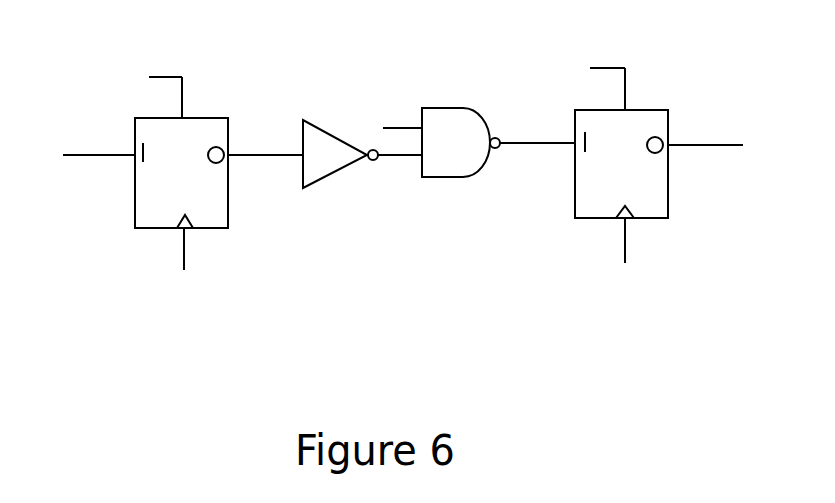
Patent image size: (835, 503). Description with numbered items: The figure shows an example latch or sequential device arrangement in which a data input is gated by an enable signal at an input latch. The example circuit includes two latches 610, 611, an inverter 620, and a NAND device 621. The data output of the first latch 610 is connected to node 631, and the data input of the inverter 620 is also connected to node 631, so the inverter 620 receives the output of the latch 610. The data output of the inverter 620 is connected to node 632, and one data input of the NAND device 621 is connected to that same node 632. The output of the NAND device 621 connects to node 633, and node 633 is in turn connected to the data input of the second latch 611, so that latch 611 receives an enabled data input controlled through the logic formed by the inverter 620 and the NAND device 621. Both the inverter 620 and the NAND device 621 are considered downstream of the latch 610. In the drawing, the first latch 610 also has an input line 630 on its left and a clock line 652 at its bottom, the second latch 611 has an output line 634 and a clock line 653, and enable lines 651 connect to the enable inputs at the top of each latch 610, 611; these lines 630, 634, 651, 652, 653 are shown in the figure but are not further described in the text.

The latch 610 is at (163, 188).
The latch 611 is at (604, 180).
The inverter 620 is at (308, 164).
The NAND device 621 is at (466, 156).
The input signal line 630 is at (82, 153).
The node 631 is at (288, 150).
The node 632 is at (412, 160).
The node 633 is at (558, 138).
The output signal line 634 is at (727, 140).
The enable signal line 651 is at (167, 70).
The first clock signal line 652 is at (184, 258).
The second clock signal line 653 is at (627, 248).